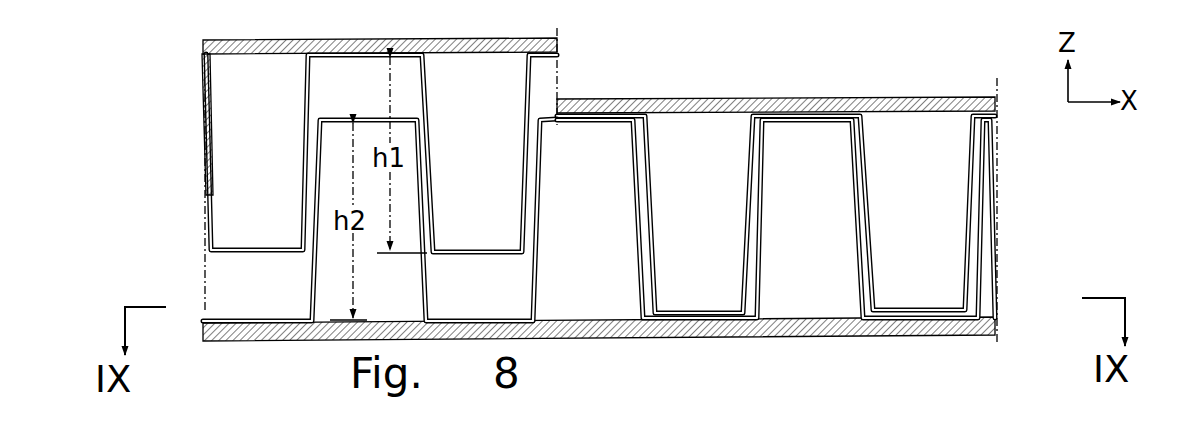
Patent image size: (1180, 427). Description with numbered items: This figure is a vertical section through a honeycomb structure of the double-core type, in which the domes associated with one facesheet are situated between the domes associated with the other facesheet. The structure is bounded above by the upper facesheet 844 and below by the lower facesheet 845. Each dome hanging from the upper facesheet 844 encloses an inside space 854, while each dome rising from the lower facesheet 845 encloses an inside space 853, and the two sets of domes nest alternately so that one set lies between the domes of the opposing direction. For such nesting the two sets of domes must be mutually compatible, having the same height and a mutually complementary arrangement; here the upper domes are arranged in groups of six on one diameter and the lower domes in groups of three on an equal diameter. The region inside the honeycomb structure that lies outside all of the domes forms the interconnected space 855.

The upper facesheet 844 is at (203, 73).
The lower facesheet 845 is at (275, 342).
The inside space of a dome associated with the lower facesheet 853 is at (337, 288).
The inside space of a dome associated with the upper facesheet 854 is at (218, 150).
The interconnected space inside the honeycomb structure 855 is at (978, 167).